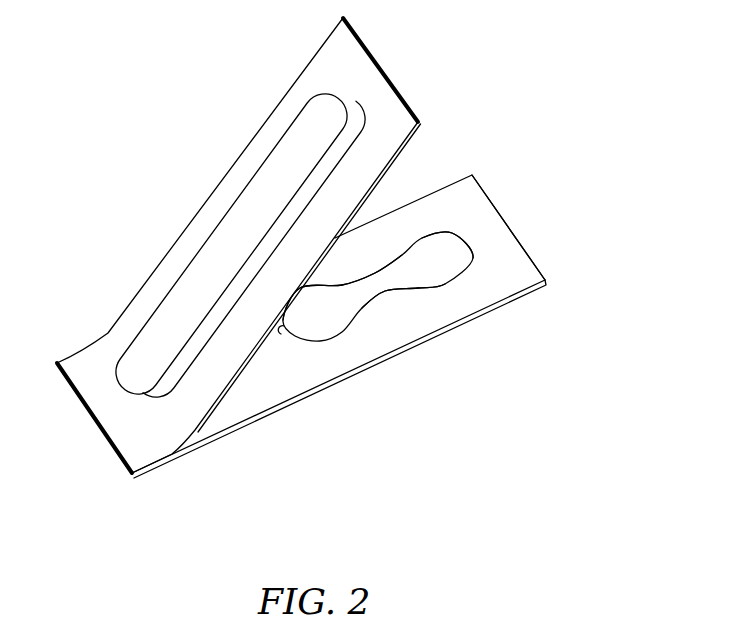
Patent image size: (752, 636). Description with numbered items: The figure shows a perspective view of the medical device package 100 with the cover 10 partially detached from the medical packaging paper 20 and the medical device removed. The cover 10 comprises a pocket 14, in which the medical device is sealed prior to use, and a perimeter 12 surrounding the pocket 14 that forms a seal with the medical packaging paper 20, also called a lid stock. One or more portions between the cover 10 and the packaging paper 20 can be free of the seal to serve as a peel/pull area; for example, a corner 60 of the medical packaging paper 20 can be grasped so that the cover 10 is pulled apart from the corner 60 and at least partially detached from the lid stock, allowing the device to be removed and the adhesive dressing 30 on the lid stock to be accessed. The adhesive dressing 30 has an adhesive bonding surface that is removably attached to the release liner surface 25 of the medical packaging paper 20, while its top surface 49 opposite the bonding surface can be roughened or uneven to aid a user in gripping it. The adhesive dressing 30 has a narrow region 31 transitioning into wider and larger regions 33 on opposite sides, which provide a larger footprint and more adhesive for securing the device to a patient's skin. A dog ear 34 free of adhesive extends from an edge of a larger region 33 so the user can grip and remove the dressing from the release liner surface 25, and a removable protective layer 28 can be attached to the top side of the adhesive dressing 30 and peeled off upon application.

The package 100 is at (140, 161).
The cover 10 is at (386, 72).
The perimeter 12 is at (345, 63).
The pocket 14 is at (202, 240).
The medical packaging paper 20 is at (420, 343).
The release liner surface 25 is at (470, 290).
The protective layer 28 is at (431, 264).
The adhesive dressing 30 is at (455, 260).
The narrow region 31 is at (374, 290).
The larger regions 33 is at (452, 235).
The dog ear 34 is at (282, 333).
The top surface 49 is at (405, 273).
The corner 60 is at (472, 175).